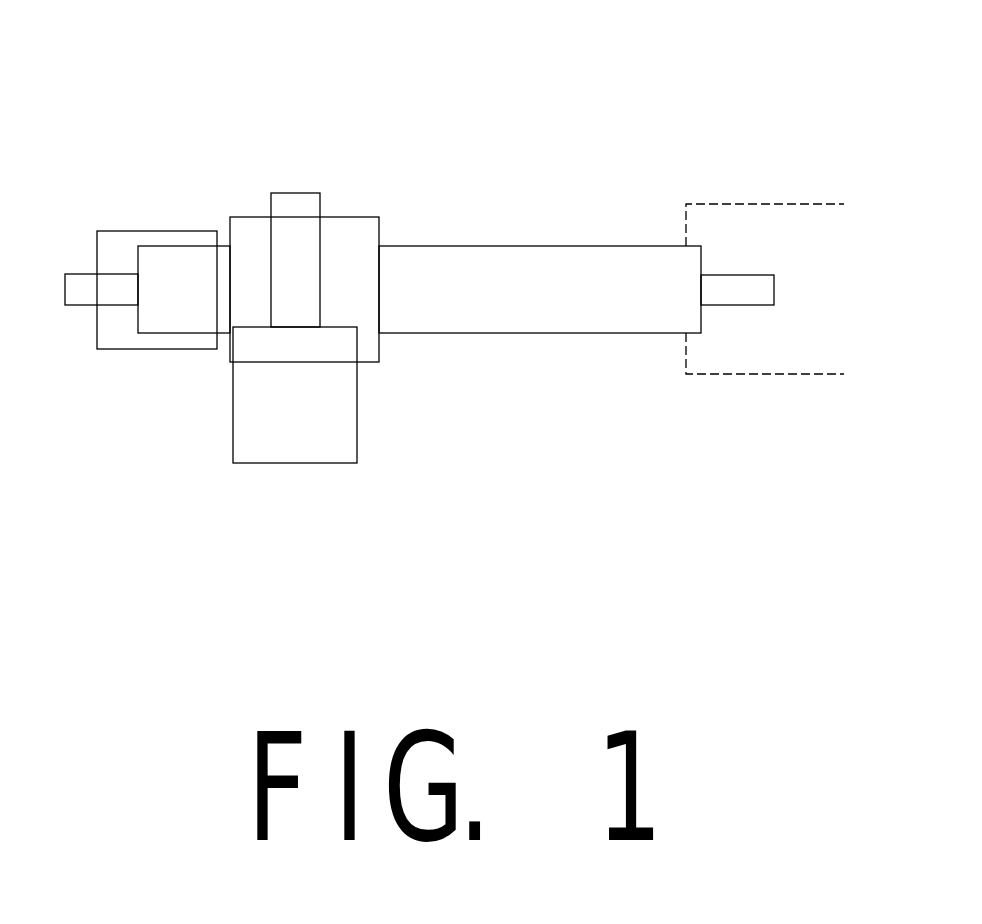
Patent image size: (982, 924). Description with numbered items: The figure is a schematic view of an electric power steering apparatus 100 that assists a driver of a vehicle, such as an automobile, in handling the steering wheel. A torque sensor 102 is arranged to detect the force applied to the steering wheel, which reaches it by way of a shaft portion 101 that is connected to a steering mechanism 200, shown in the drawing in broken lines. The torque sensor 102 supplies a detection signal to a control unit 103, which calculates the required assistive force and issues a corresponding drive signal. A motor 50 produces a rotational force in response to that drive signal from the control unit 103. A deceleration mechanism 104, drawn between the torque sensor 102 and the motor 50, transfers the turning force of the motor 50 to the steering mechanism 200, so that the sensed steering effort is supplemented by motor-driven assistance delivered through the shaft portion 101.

The electric power steering apparatus 100 is at (205, 112).
The shaft portion 101 is at (545, 246).
The torque sensor 102 is at (379, 229).
The control unit 103 is at (132, 349).
The deceleration mechanism 104 is at (296, 193).
The motor 50 is at (357, 433).
The steering mechanism 200 is at (760, 204).